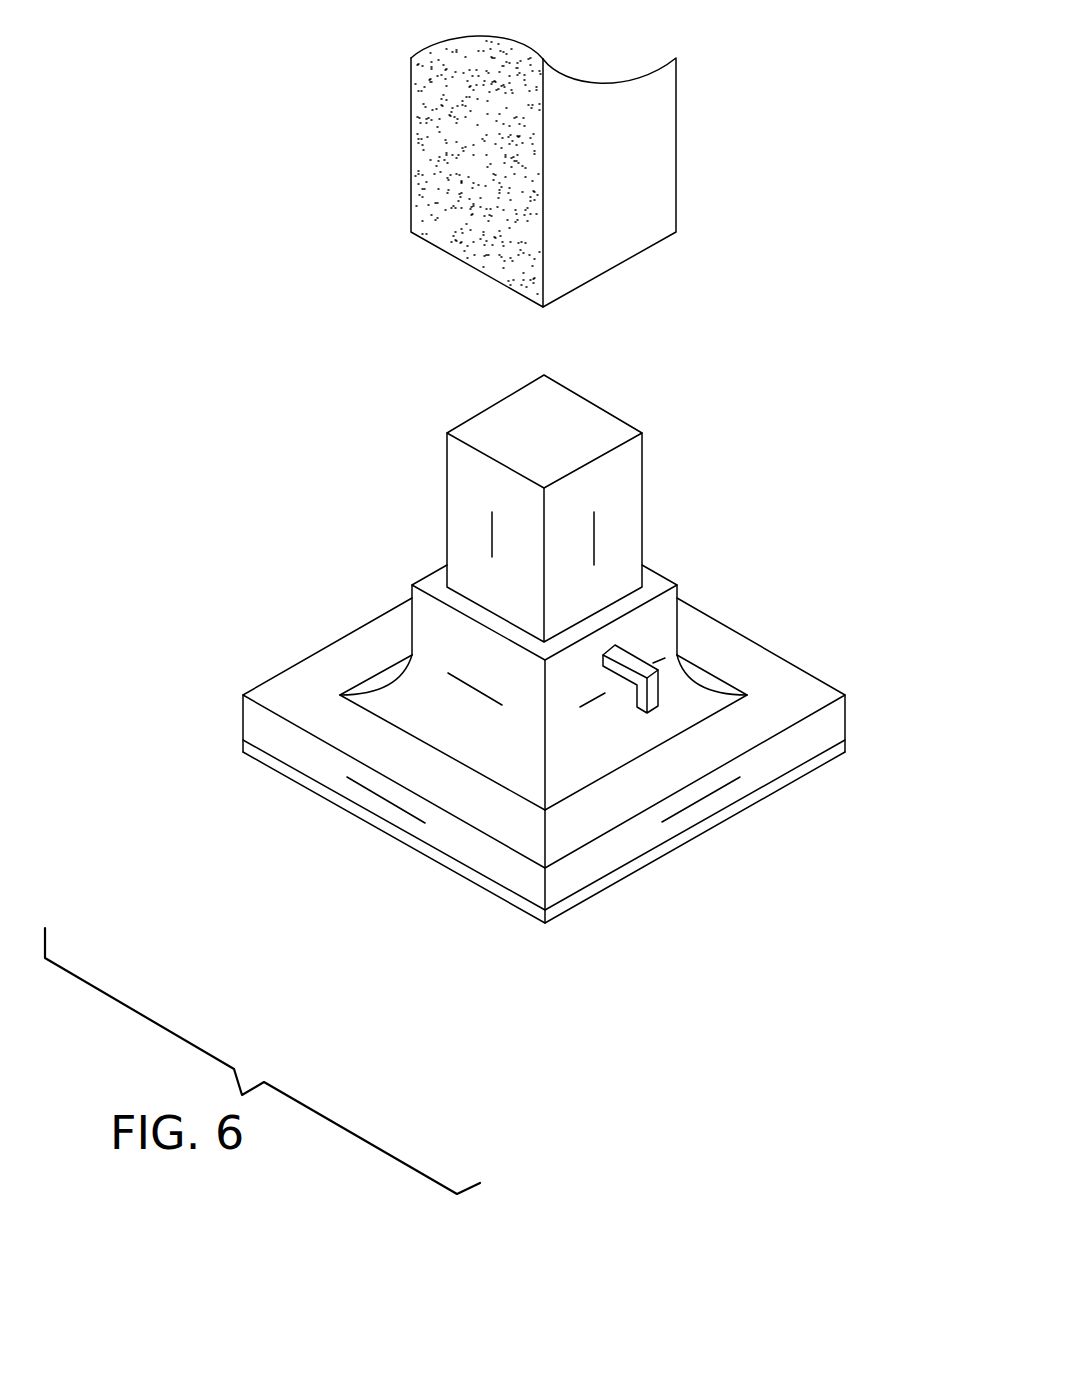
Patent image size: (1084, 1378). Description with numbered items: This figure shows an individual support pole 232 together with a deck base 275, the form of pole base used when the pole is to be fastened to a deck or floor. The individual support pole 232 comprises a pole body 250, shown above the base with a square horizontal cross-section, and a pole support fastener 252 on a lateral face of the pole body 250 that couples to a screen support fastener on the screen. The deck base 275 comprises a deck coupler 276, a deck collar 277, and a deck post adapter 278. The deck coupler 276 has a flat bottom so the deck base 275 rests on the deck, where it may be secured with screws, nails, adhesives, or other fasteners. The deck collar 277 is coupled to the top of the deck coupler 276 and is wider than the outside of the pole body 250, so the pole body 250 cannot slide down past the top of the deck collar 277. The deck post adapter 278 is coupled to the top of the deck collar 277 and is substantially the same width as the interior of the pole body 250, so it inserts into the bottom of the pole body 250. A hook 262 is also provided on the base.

The individual support pole 232 is at (231, 761).
The pole body 250 is at (638, 143).
The pole support fastener 252 is at (487, 235).
The hook 262 is at (643, 657).
The deck base 275 is at (783, 324).
The deck coupler 276 is at (393, 803).
The deck collar 277 is at (427, 640).
The deck post adapter 278 is at (488, 500).